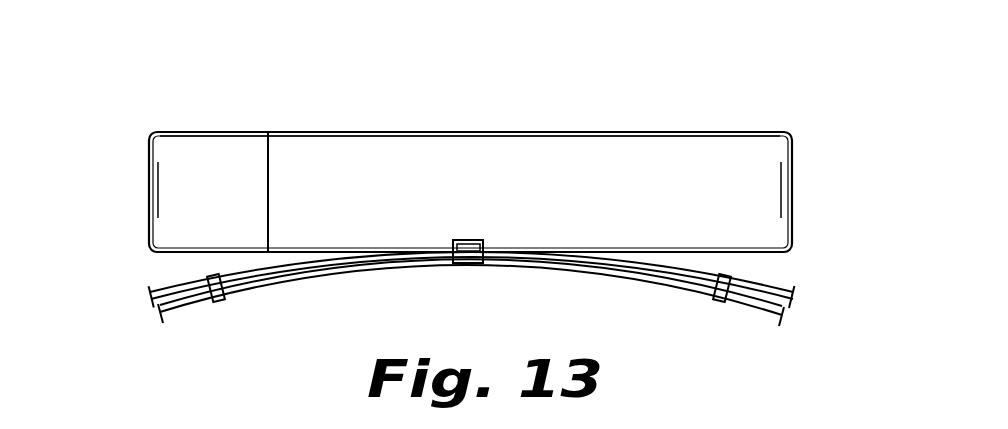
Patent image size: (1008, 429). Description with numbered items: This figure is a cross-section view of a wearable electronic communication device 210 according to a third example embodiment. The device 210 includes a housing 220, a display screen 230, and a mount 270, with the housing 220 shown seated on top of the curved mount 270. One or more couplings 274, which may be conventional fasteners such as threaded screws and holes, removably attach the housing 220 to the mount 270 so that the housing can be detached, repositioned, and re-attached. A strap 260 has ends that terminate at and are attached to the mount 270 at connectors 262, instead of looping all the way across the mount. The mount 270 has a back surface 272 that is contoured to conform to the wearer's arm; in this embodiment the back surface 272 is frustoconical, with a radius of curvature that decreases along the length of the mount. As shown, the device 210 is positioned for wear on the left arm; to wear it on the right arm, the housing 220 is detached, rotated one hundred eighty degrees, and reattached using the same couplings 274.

The wearable electronic communication device 210 is at (760, 78).
The housing 220 is at (798, 208).
The display screen 230 is at (457, 128).
The strap 260 is at (164, 291).
The connectors 262 is at (205, 272).
The mount 270 is at (317, 280).
The back surface 272 is at (667, 288).
The couplings 274 is at (477, 274).